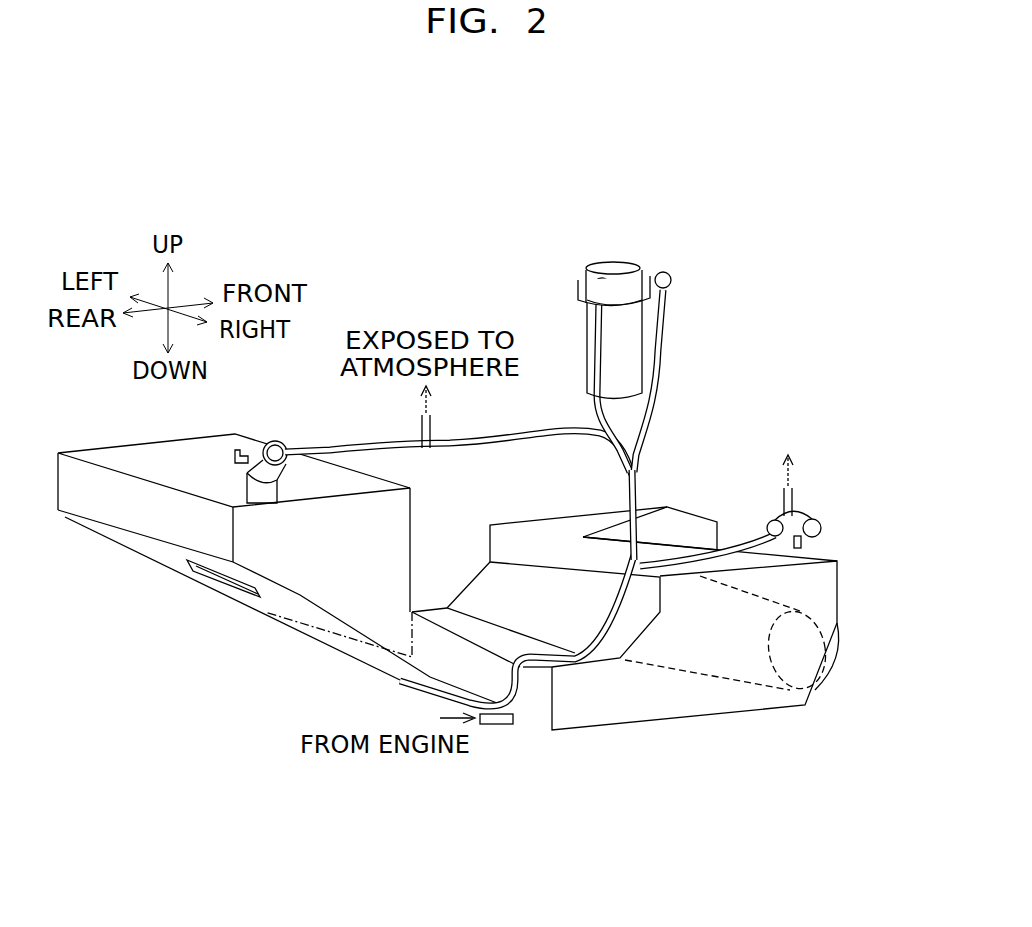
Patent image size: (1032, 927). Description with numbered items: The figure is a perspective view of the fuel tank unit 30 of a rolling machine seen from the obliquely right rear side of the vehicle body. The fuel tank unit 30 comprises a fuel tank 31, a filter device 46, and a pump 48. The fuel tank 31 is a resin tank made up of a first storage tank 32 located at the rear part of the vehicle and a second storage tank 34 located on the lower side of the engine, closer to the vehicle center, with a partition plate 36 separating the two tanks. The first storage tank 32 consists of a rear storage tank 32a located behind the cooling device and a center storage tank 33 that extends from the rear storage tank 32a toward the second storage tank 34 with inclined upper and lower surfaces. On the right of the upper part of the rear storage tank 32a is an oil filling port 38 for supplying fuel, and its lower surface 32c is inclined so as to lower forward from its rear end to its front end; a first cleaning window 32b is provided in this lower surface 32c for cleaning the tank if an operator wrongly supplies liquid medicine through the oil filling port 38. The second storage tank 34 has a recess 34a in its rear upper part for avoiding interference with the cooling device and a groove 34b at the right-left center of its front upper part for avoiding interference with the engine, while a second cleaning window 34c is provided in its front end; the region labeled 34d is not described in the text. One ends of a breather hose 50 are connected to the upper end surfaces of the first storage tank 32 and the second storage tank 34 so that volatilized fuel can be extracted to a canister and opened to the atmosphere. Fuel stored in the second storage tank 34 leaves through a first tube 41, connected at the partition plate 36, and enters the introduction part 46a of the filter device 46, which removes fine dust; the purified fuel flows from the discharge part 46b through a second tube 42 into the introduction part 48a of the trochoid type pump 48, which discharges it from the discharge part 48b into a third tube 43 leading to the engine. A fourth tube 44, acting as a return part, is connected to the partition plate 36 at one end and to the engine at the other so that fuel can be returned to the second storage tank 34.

The fuel tank unit 30 is at (778, 312).
The fuel tank 31 is at (277, 568).
The first storage tank 32 is at (277, 568).
The rear storage tank 32a is at (400, 533).
The first cleaning window 32b is at (213, 585).
The lower surface 32c is at (322, 624).
The center storage tank 33 is at (432, 637).
The second storage tank 34 is at (673, 628).
The recess 34a is at (507, 577).
The groove 34b is at (717, 532).
The second cleaning window 34c is at (827, 680).
The bottom surface 34d is at (658, 703).
The partition plate 36 is at (560, 725).
The oil filling port 38 is at (275, 440).
The first tube 41 is at (585, 672).
The second tube 42 is at (598, 410).
The third tube 43 is at (783, 498).
The fourth tube 44 is at (510, 725).
The filter device 46 is at (619, 348).
The introduction part 46a is at (672, 286).
The discharge part 46b is at (585, 287).
The pump 48 is at (768, 499).
The introduction part 48a is at (820, 513).
The discharge part 48b is at (805, 505).
The breather hose 50 is at (365, 440).